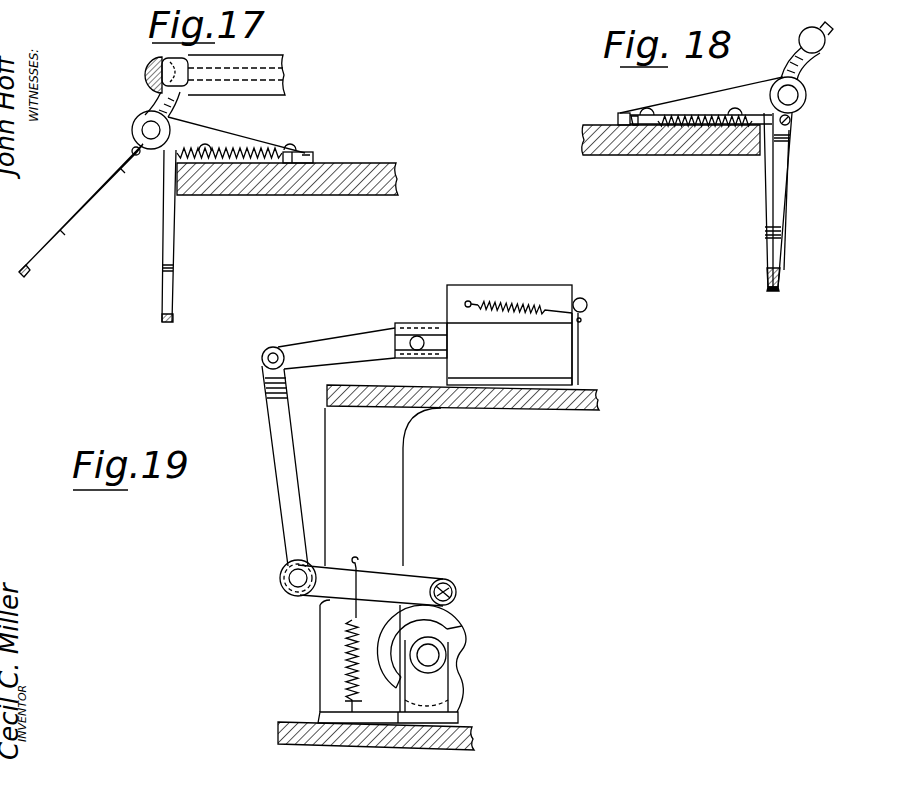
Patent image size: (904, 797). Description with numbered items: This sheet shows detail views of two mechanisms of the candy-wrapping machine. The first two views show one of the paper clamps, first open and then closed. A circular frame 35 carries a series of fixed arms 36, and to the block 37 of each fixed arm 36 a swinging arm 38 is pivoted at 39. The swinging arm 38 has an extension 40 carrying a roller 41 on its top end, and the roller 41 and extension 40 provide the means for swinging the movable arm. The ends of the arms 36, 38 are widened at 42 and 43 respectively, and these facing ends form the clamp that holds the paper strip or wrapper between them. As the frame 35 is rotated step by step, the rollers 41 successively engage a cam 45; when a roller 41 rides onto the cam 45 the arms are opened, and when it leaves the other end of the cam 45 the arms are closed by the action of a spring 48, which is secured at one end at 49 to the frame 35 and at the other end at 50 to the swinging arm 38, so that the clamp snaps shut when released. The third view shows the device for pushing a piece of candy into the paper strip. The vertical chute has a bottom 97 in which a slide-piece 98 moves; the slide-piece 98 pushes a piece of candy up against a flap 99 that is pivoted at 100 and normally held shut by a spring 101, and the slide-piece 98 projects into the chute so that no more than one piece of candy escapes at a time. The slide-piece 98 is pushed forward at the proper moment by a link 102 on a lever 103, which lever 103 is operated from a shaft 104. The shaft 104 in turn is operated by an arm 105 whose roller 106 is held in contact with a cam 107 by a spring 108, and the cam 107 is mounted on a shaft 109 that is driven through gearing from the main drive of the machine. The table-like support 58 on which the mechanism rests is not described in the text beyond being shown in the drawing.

In FIG. 17, the frame 35 is at (365, 172).
In FIG. 18, the frame 35 is at (690, 150).
In FIG. 17, the fixed arm 36 is at (174, 230).
In FIG. 18, the fixed arm 36 is at (766, 210).
In FIG. 17, the block 37 is at (238, 142).
In FIG. 18, the block 37 is at (743, 94).
In FIG. 17, the swinging arm 38 is at (92, 176).
In FIG. 18, the swinging arm 38 is at (782, 186).
In FIG. 17, the pivot 39 is at (150, 128).
In FIG. 18, the pivot 39 is at (806, 95).
In FIG. 17, the extension 40 is at (176, 106).
In FIG. 18, the extension 40 is at (808, 64).
In FIG. 17, the roller 41 is at (187, 79).
In FIG. 18, the roller 41 is at (825, 40).
In FIG. 17, the widened end of fixed arm 42 is at (173, 299).
In FIG. 18, the widened end of fixed arm 42 is at (768, 258).
In FIG. 17, the widened end of swinging arm 43 is at (35, 258).
In FIG. 18, the widened end of swinging arm 43 is at (780, 268).
In FIG. 17, the cam 45 is at (148, 60).
In FIG. 17, the spring 48 is at (266, 152).
In FIG. 18, the spring 48 is at (681, 115).
In FIG. 17, the spring attachment to frame 49 is at (310, 158).
In FIG. 18, the spring attachment to frame 49 is at (629, 113).
In FIG. 17, the spring attachment to swinging arm 50 is at (134, 149).
In FIG. 18, the spring attachment to swinging arm 50 is at (790, 121).
In FIG. 19, the table 58 is at (584, 409).
In FIG. 19, the bottom 97 is at (524, 402).
In FIG. 19, the slide-piece 98 is at (424, 324).
In FIG. 19, the flap 99 is at (574, 364).
In FIG. 19, the pivot of flap 100 is at (588, 306).
In FIG. 19, the spring 101 is at (509, 304).
In FIG. 19, the link 102 is at (331, 346).
In FIG. 19, the lever 103 is at (280, 486).
In FIG. 19, the shaft 104 is at (296, 578).
In FIG. 19, the arm 105 is at (415, 585).
In FIG. 19, the roller 106 is at (456, 596).
In FIG. 19, the cam 107 is at (456, 637).
In FIG. 19, the spring 108 is at (348, 641).
In FIG. 19, the shaft 109 is at (434, 657).